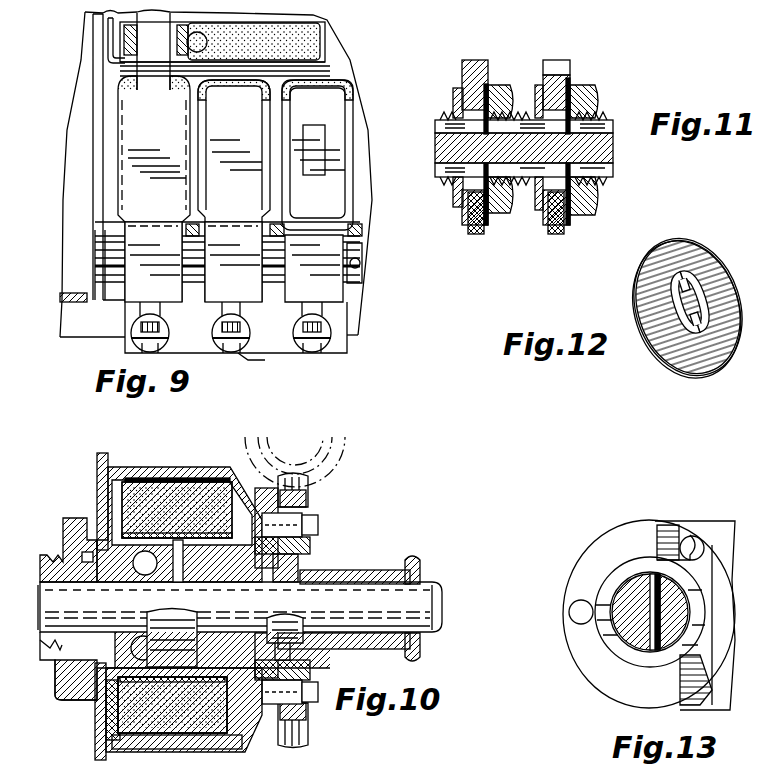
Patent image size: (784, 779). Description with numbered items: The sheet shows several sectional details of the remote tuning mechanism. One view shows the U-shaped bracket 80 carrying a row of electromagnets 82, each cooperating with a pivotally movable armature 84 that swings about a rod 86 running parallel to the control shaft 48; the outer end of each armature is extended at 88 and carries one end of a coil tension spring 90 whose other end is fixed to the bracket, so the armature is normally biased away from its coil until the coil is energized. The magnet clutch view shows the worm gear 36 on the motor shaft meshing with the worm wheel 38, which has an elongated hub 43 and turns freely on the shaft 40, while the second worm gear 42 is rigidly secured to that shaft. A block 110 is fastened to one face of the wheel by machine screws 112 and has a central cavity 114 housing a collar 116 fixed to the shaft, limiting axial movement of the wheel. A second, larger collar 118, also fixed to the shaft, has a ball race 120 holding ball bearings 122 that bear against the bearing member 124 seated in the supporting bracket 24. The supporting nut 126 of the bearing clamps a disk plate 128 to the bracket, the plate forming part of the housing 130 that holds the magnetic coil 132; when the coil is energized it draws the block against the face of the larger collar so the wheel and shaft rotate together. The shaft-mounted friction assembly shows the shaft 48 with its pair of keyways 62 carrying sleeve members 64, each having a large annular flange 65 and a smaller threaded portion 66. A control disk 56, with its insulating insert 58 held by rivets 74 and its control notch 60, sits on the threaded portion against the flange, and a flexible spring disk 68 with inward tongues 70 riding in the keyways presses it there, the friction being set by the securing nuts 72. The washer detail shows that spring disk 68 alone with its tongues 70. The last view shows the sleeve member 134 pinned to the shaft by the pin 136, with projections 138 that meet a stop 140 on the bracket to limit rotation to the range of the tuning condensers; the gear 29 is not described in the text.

In FIG. 10, the supporting bracket 24 is at (95, 715).
In FIG. 10, the drum 29 is at (295, 445).
In FIG. 10, the worm gear 36 is at (330, 455).
In FIG. 10, the worm wheel 38 is at (305, 492).
In FIG. 10, the shaft 40 is at (425, 600).
In FIG. 10, the second worm gear 42 is at (415, 556).
In FIG. 10, the elongated hub 43 is at (375, 570).
In FIG. 11, the shaft 48 is at (613, 150).
In FIG. 13, the shaft 48 is at (625, 633).
In FIG. 11, the control disk 56 is at (478, 62).
In FIG. 11, the insert 58 is at (472, 234).
In FIG. 11, the control notch 60 is at (550, 62).
In FIG. 11, the keyway 62 is at (608, 125).
In FIG. 11, the sleeve member 64 is at (525, 190).
In FIG. 11, the annular flanged portion 65 is at (535, 200).
In FIG. 11, the threaded portion 66 is at (455, 100).
In FIG. 11, the flexible spring disk 68 is at (570, 90).
In FIG. 12, the flexible spring disk 68 is at (712, 270).
In FIG. 11, the tongue 70 is at (470, 130).
In FIG. 12, the tongue 70 is at (700, 295).
In FIG. 11, the securing nut 72 is at (597, 195).
In FIG. 11, the rivet 74 is at (455, 195).
In FIG. 9, the U-shaped bracket 80 is at (323, 70).
In FIG. 9, the electromagnet 82 is at (205, 110).
In FIG. 9, the armature 84 is at (170, 305).
In FIG. 9, the rod 86 is at (358, 255).
In FIG. 9, the extended outer end 88 is at (308, 353).
In FIG. 9, the coil tension spring 90 is at (131, 330).
In FIG. 10, the block 110 is at (300, 545).
In FIG. 10, the machine screw 112 is at (310, 520).
In FIG. 10, the cavity 114 is at (300, 650).
In FIG. 10, the collar 116 is at (298, 560).
In FIG. 10, the second collar 118 is at (190, 582).
In FIG. 10, the ball race 120 is at (160, 585).
In FIG. 10, the ball bearing 122 is at (95, 575).
In FIG. 10, the bearing member 124 is at (55, 648).
In FIG. 10, the supporting nut 126 is at (70, 683).
In FIG. 10, the disk plate 128 is at (110, 730).
In FIG. 10, the housing 130 is at (218, 745).
In FIG. 10, the magnetic coil 132 is at (150, 735).
In FIG. 13, the sleeve member 134 is at (630, 588).
In FIG. 13, the pin 136 is at (645, 650).
In FIG. 13, the projection 138 is at (672, 535).
In FIG. 13, the stop 140 is at (569, 612).